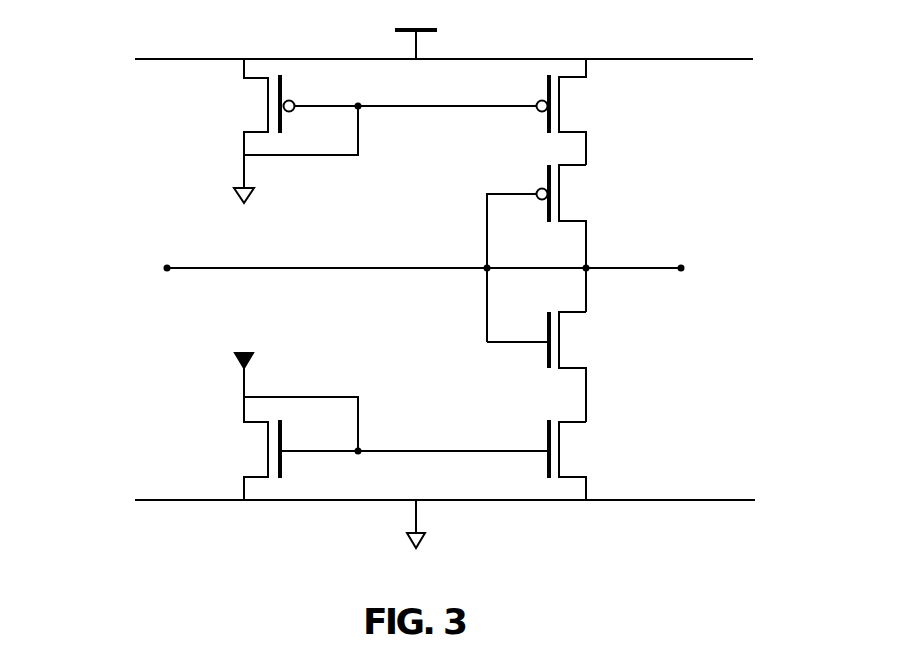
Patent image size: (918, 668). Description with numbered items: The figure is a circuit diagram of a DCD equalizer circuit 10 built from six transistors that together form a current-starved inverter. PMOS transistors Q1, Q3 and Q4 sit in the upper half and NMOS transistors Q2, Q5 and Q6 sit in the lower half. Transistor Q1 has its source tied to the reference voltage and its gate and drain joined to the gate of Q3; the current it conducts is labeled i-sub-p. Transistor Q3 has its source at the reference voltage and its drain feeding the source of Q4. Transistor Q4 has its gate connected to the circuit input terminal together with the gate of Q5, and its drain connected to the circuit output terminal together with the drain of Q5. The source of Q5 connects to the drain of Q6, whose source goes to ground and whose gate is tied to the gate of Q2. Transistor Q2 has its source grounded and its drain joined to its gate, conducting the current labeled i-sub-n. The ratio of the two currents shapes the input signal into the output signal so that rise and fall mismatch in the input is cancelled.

The DCD equalizer circuit 10 is at (442, 304).
The PMOS transistor Q1 is at (368, 149).
The NMOS transistor Q2 is at (373, 410).
The PMOS transistor Q3 is at (578, 112).
The PMOS transistor Q4 is at (552, 253).
The NMOS transistor Q5 is at (552, 367).
The NMOS transistor Q6 is at (583, 460).